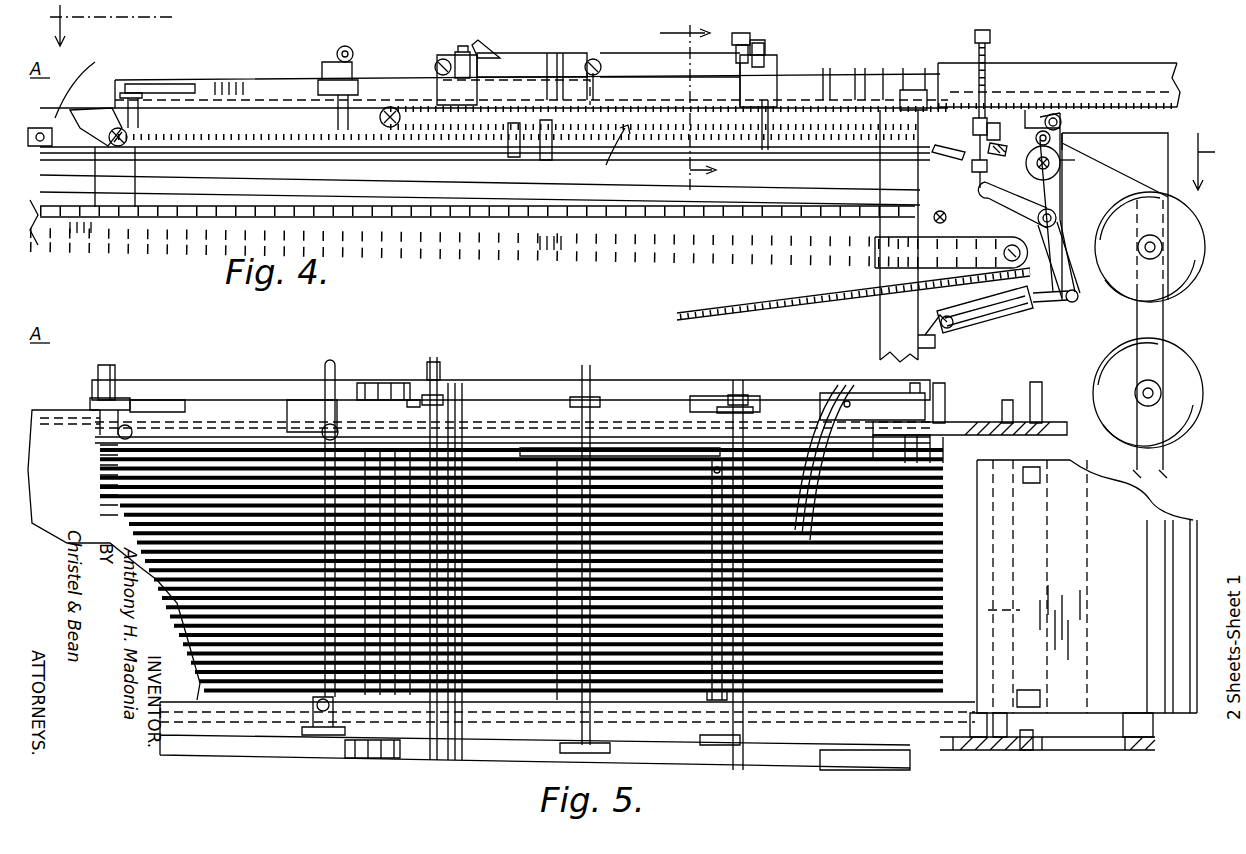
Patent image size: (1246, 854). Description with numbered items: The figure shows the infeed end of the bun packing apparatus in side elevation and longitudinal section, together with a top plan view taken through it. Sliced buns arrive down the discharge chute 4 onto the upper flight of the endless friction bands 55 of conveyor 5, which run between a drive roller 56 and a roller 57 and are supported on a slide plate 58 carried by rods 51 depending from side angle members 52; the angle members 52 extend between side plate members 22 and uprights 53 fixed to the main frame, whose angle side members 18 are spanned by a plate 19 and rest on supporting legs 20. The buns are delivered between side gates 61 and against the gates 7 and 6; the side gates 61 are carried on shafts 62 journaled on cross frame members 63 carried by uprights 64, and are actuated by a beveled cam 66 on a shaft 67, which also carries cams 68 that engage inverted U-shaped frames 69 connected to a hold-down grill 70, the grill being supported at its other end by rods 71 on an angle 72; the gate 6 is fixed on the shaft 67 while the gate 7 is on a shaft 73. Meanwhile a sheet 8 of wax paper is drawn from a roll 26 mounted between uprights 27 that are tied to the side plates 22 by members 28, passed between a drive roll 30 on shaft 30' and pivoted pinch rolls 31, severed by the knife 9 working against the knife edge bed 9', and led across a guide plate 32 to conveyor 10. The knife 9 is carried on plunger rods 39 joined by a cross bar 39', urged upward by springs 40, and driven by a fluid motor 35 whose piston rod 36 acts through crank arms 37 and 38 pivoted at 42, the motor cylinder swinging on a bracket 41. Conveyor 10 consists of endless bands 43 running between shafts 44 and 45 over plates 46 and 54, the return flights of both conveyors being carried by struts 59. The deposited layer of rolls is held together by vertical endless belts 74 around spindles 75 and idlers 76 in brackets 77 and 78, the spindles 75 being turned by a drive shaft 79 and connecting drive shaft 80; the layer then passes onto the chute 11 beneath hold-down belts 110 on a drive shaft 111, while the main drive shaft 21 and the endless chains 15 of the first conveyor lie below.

In FIG. 4, the discharge chute 4 is at (1165, 66).
In FIG. 4, the conveyor 5 is at (624, 97).
In FIG. 5, the conveyor 5 is at (811, 710).
In FIG. 4, the gate 6 is at (435, 88).
In FIG. 5, the gate 6 is at (350, 770).
In FIG. 4, the gate 7 is at (596, 88).
In FIG. 5, the gate 7 is at (557, 667).
In FIG. 4, the sheet 8 is at (1150, 170).
In FIG. 5, the sheet 8 is at (1105, 508).
In FIG. 4, the knife 9 is at (1018, 127).
In FIG. 5, the knife 9 is at (1008, 624).
In FIG. 4, the knife edge bed 9' is at (1008, 159).
In FIG. 5, the knife edge bed 9' is at (1013, 594).
In FIG. 4, the conveyor 10 is at (885, 170).
In FIG. 5, the conveyor 10 is at (238, 460).
In FIG. 4, the chute 11 is at (75, 80).
In FIG. 5, the chute 11 is at (48, 410).
In FIG. 4, the endless chains 15 is at (677, 316).
In FIG. 5, the endless chains 15 is at (955, 440).
In FIG. 4, the angle side members 18 is at (690, 250).
In FIG. 4, the plate 19 is at (640, 234).
In FIG. 4, the supporting legs 20 is at (878, 325).
In FIG. 4, the shaft 21 is at (990, 249).
In FIG. 5, the shaft 21 is at (1006, 400).
In FIG. 4, the side plate members 22 is at (905, 250).
In FIG. 5, the side plate members 22 is at (1058, 422).
In FIG. 4, the roll 26 is at (1172, 302).
In FIG. 5, the roll 26 is at (1190, 520).
In FIG. 4, the uprights 27 is at (1167, 450).
In FIG. 5, the uprights 27 is at (1140, 752).
In FIG. 4, the members 28 is at (1130, 133).
In FIG. 5, the members 28 is at (1087, 440).
In FIG. 4, the drive roll 30 is at (1063, 169).
In FIG. 5, the drive roll 30 is at (1086, 568).
In FIG. 4, the shaft 30' is at (1092, 156).
In FIG. 5, the shaft 30' is at (1045, 385).
In FIG. 4, the pinch rolls 31 is at (1062, 124).
In FIG. 5, the pinch rolls 31 is at (1042, 480).
In FIG. 4, the guide plate 32 is at (958, 155).
In FIG. 4, the fluid motor 35 is at (985, 330).
In FIG. 4, the piston rod 36 is at (1045, 305).
In FIG. 4, the crank arm 37 is at (1078, 300).
In FIG. 4, the crank arm 38 is at (1030, 200).
In FIG. 4, the plunger rods 39 is at (957, 159).
In FIG. 4, the cross bar 39' is at (961, 216).
In FIG. 4, the springs 40 is at (995, 46).
In FIG. 4, the bracket 41 is at (935, 345).
In FIG. 4, the pivot 42 is at (1057, 217).
In FIG. 4, the endless bands 43 is at (826, 148).
In FIG. 4, the shaft 44 is at (912, 205).
In FIG. 5, the shaft 44 is at (912, 386).
In FIG. 4, the shaft 45 is at (132, 152).
In FIG. 5, the shaft 45 is at (105, 364).
In FIG. 4, the plate 46 is at (722, 142).
In FIG. 4, the rods 51 is at (858, 75).
In FIG. 4, the angle members 52 is at (834, 72).
In FIG. 5, the angle members 52 is at (700, 394).
In FIG. 4, the uprights 53 is at (108, 164).
In FIG. 4, the slide plate 54 is at (268, 140).
In FIG. 4, the endless friction bands 55 is at (882, 74).
In FIG. 5, the endless friction bands 55 is at (824, 449).
In FIG. 4, the drive roller 56 is at (910, 88).
In FIG. 5, the drive roller 56 is at (947, 392).
In FIG. 4, the roller 57 is at (384, 128).
In FIG. 5, the roller 57 is at (395, 375).
In FIG. 4, the slide plate 58 is at (548, 142).
In FIG. 4, the struts 59 is at (772, 110).
In FIG. 4, the side gates 61 is at (660, 62).
In FIG. 5, the side gates 61 is at (525, 448).
In FIG. 4, the shafts 62 is at (530, 52).
In FIG. 5, the shafts 62 is at (615, 447).
In FIG. 4, the cross frame members 63 is at (767, 44).
In FIG. 5, the cross frame members 63 is at (755, 405).
In FIG. 4, the uprights 64 is at (500, 88).
In FIG. 5, the uprights 64 is at (466, 395).
In FIG. 4, the beveled cam 66 is at (458, 50).
In FIG. 5, the beveled cam 66 is at (400, 382).
In FIG. 4, the shaft 67 is at (438, 60).
In FIG. 5, the shaft 67 is at (435, 362).
In FIG. 4, the cams 68 is at (478, 42).
In FIG. 5, the frames 69 is at (458, 463).
In FIG. 4, the hold-down grill 70 is at (562, 55).
In FIG. 4, the rods 71 is at (734, 62).
In FIG. 4, the angle 72 is at (726, 42).
In FIG. 5, the angle 72 is at (685, 745).
In FIG. 4, the shaft 73 is at (602, 68).
In FIG. 5, the shaft 73 is at (587, 364).
In FIG. 4, the endless belts 74 is at (248, 100).
In FIG. 5, the endless belts 74 is at (222, 380).
In FIG. 4, the spindles 75 is at (335, 116).
In FIG. 5, the spindles 75 is at (335, 400).
In FIG. 4, the idlers 76 is at (112, 118).
In FIG. 5, the idlers 76 is at (126, 424).
In FIG. 4, the brackets 77 is at (322, 82).
In FIG. 5, the brackets 77 is at (300, 406).
In FIG. 4, the brackets 78 is at (155, 86).
In FIG. 5, the brackets 78 is at (152, 400).
In FIG. 4, the drive shaft 79 is at (340, 48).
In FIG. 5, the drive shaft 79 is at (322, 370).
In FIG. 5, the connecting drive shaft 80 is at (312, 690).
In FIG. 5, the endless belts 110 is at (70, 470).
In FIG. 5, the drive shaft 111 is at (114, 375).